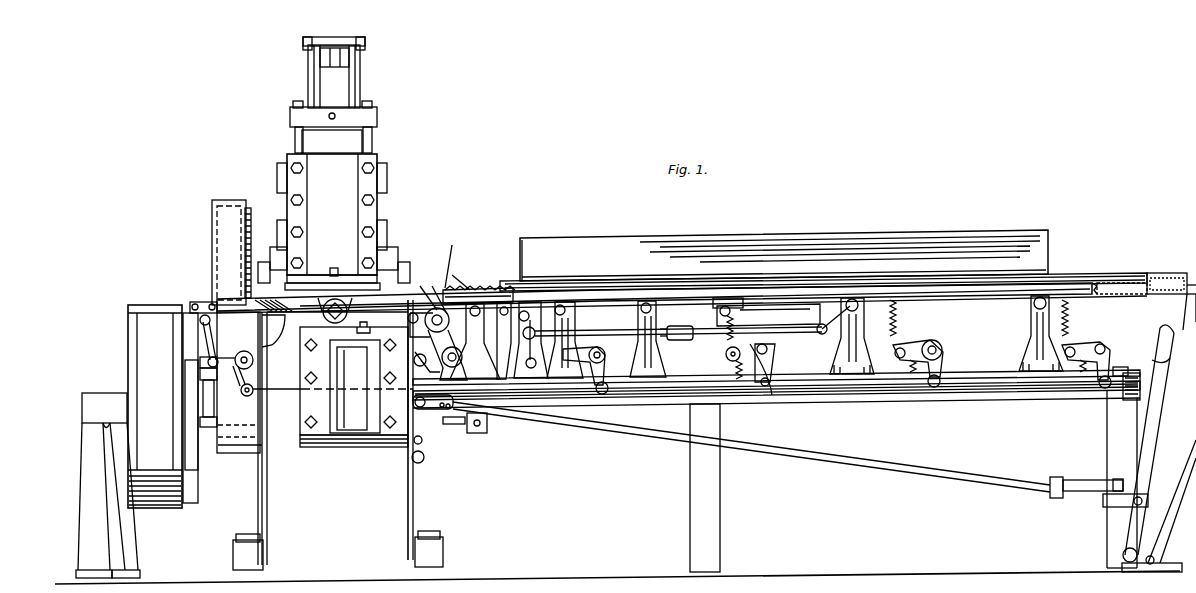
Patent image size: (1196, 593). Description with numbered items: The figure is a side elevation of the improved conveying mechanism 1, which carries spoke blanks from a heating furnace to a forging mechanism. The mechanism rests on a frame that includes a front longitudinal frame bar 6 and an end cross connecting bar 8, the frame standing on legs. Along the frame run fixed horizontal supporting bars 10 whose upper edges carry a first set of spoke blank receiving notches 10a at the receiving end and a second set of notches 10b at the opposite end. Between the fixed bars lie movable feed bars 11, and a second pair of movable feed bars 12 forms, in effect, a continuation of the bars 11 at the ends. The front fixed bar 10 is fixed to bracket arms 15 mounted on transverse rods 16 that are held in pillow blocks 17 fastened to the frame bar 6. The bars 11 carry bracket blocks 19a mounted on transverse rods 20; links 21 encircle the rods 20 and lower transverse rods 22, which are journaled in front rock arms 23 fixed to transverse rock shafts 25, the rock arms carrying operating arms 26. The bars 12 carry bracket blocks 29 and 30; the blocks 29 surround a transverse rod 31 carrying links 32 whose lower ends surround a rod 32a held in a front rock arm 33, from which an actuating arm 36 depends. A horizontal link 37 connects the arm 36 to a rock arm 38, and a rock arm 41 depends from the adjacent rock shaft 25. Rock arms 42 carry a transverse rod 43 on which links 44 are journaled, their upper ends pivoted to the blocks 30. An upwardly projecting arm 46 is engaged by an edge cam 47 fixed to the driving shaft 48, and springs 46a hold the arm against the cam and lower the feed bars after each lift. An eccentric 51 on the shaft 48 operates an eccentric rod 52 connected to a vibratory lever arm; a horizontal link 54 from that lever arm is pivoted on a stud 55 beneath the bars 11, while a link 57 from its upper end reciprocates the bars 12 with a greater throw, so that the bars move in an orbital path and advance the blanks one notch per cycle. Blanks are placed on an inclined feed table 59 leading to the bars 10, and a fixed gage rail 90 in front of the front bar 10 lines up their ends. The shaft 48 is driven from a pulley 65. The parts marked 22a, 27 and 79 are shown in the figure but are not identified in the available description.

The conveying mechanism 1 is at (984, 309).
The front longitudinal frame bar 6 is at (995, 395).
The end cross connecting bar 8 is at (468, 410).
The fixed supporting bars 10 is at (682, 311).
The spoke blank receiving notches 10a is at (1110, 283).
The spoke blank receiving notches 10b is at (461, 275).
The movable feed bars 11 is at (784, 248).
The movable feed bars 12 is at (240, 312).
The bracket arms 15 is at (640, 310).
The transverse horizontal rods 16 is at (1037, 312).
The pillow blocks 17 is at (833, 336).
The outer bracket blocks 19a is at (768, 314).
The transverse rods 20 is at (720, 319).
The links 21 is at (723, 359).
The transverse rods 22 is at (739, 369).
The lever arm 22a is at (750, 409).
The front rock arms 23 is at (817, 328).
The transverse rock shafts 25 is at (1118, 346).
The operating arms 26 is at (596, 388).
The rail 27 is at (690, 396).
The bracket blocks 29 is at (214, 300).
The bracket blocks 30 is at (433, 308).
The transverse rod 31 is at (200, 320).
The links 32 is at (202, 344).
The transverse rod 32a is at (240, 348).
The front rock arm 33 is at (225, 385).
The actuating arm 36 is at (258, 378).
The horizontal link 37 is at (294, 392).
The rock arm 38 is at (521, 340).
The rock arm 41 is at (608, 388).
The rock arms 42 is at (449, 407).
The transverse rod 43 is at (391, 383).
The links 44 is at (382, 352).
The arm 46 is at (475, 341).
The springs 46a is at (1125, 333).
The edge cam 47 is at (492, 289).
The driving shaft 48 is at (443, 259).
The eccentric 51 is at (445, 355).
The eccentric rod 52 is at (505, 341).
The horizontal link 54 is at (678, 327).
The horizontal stud 55 is at (819, 337).
The link 57 is at (533, 260).
The inclined feed table 59 is at (1160, 273).
The pulley 65 is at (172, 406).
The cylinder head 79 is at (368, 108).
The gage rail 90 is at (1150, 277).